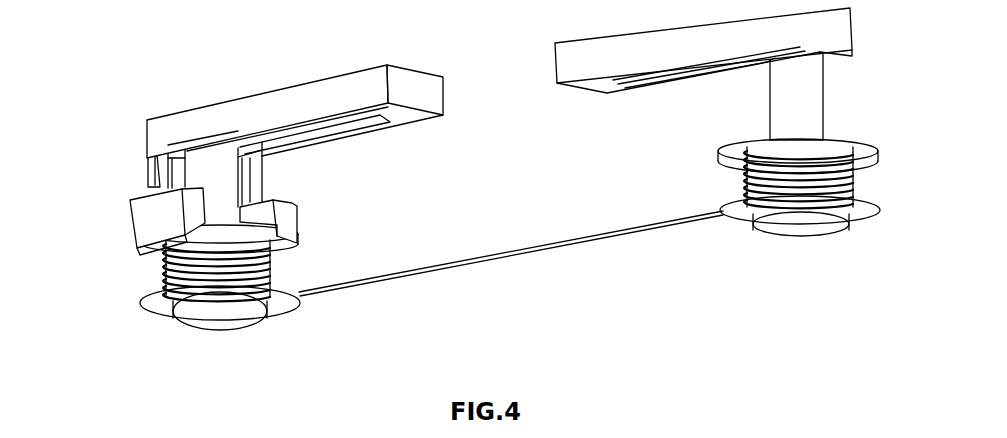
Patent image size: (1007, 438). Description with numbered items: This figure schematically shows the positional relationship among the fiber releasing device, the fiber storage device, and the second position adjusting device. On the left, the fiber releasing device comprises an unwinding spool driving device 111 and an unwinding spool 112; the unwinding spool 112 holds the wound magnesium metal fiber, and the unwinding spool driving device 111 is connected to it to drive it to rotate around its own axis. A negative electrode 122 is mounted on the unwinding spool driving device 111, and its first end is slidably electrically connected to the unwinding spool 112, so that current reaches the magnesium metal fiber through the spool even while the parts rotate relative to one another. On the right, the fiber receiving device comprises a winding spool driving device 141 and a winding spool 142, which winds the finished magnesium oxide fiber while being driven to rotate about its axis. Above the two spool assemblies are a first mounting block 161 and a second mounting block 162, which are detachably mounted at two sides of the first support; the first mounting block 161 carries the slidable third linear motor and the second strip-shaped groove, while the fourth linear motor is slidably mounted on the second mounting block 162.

The unwinding spool driving device 111 is at (222, 155).
The unwinding spool 112 is at (290, 307).
The negative electrode 122 is at (160, 187).
The winding spool driving device 141 is at (820, 77).
The winding spool 142 is at (742, 225).
The first mounting block 161 is at (300, 84).
The second mounting block 162 is at (593, 88).